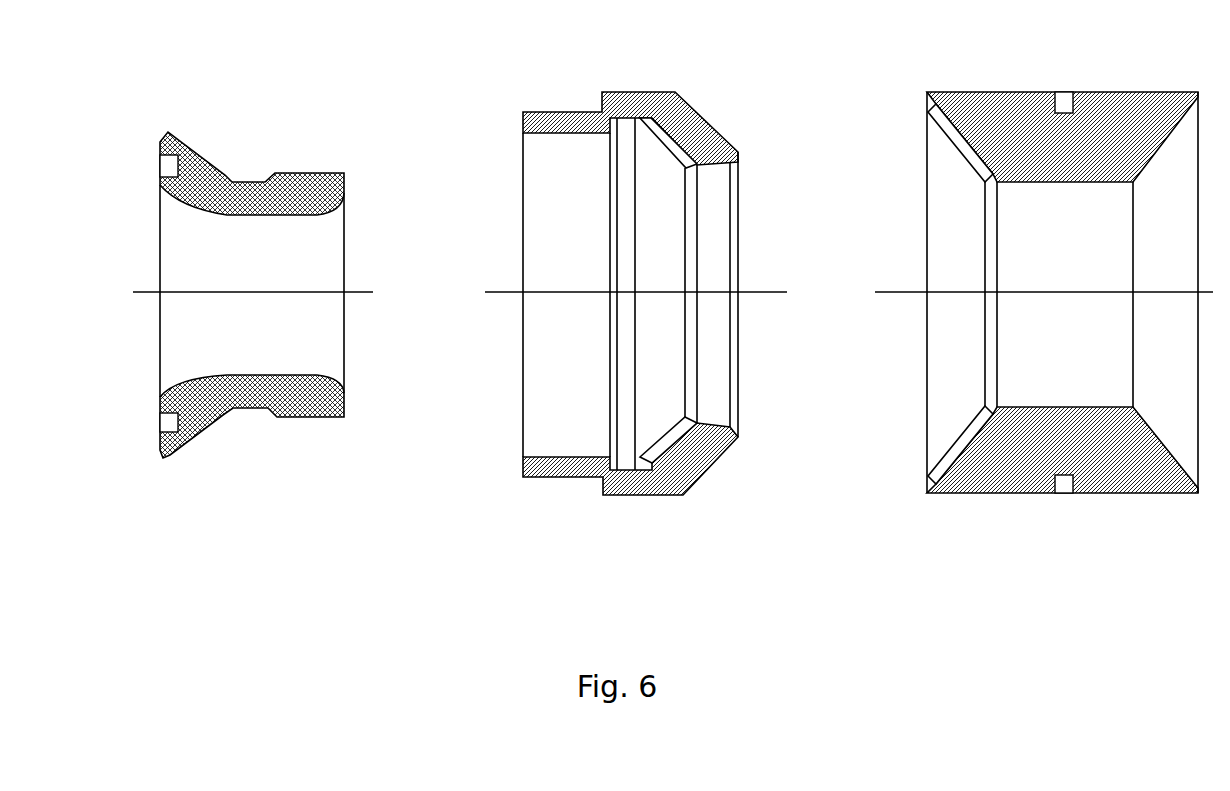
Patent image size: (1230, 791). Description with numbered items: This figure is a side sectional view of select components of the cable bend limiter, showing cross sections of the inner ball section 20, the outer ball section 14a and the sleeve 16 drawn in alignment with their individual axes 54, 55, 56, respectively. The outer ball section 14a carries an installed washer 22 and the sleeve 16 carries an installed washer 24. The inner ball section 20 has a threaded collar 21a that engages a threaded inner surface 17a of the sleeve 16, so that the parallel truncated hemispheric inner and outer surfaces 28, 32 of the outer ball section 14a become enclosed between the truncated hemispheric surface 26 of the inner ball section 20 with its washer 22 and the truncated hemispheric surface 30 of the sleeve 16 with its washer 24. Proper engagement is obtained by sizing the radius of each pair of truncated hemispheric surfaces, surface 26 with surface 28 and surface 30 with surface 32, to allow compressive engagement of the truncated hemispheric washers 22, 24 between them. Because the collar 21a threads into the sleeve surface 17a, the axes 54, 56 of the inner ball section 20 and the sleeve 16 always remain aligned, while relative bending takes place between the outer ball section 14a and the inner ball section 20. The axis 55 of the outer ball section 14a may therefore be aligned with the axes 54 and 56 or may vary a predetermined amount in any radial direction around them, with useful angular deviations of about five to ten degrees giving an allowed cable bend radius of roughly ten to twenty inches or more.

The outer ball section 14a is at (663, 302).
The sleeve 16 is at (1031, 302).
The threaded inner surface 17a is at (1023, 238).
The inner ball section 20 is at (205, 430).
The threaded collar 21a is at (252, 289).
The washer 22 is at (670, 370).
The washer 24 is at (953, 370).
The truncated hemispheric surface 26 is at (190, 148).
The truncated hemispheric inner surface 28 is at (643, 130).
The truncated hemispheric surface 30 is at (957, 133).
The truncated hemispheric outer surface 32 is at (703, 108).
The axis 54 is at (143, 292).
The axis 55 is at (503, 292).
The axis 56 is at (910, 292).